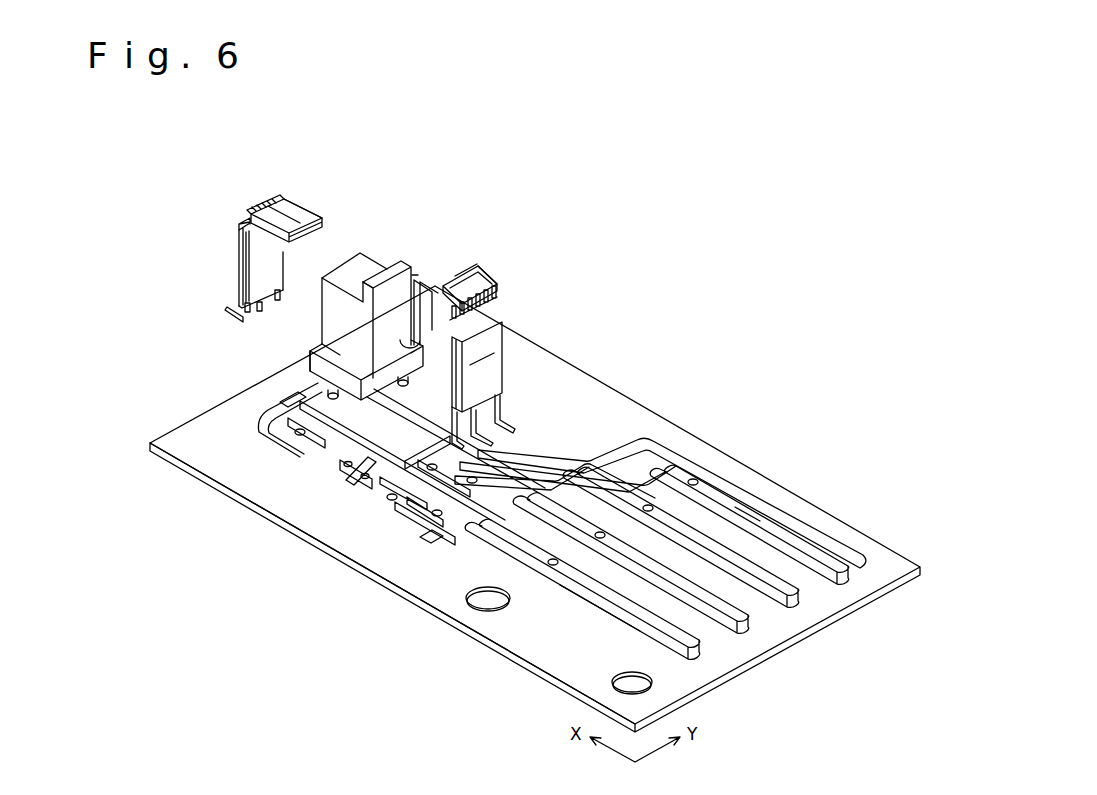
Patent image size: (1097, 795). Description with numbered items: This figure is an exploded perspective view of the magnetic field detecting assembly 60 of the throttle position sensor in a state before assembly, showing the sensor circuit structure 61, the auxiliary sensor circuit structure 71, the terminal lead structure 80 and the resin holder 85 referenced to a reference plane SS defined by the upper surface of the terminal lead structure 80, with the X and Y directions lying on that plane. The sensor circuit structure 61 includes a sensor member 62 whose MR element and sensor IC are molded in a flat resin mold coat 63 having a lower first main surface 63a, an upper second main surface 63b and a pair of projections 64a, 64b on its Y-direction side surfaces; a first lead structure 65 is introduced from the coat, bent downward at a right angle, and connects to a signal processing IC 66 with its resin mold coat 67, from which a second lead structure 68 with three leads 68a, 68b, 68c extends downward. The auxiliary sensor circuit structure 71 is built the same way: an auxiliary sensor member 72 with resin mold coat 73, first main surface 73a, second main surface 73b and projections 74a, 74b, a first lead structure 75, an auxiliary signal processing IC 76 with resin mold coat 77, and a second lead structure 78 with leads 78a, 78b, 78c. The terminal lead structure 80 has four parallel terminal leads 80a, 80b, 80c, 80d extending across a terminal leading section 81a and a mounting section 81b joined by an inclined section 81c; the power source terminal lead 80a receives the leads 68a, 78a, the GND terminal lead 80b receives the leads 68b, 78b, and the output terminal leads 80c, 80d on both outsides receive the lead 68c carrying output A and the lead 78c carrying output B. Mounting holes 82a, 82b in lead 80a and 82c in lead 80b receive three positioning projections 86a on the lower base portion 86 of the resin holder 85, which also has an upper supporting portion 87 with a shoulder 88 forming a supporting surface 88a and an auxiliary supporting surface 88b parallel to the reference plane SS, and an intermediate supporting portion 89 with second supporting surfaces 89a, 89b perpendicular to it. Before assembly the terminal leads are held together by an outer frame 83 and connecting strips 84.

The magnetic field detecting assembly 60 is at (629, 271).
The sensor circuit structure 61 is at (500, 332).
The sensor member 62 is at (462, 282).
The resin mold coat 63 is at (503, 262).
The first main surface 63a is at (447, 290).
The second main surface 63b is at (485, 282).
The projection 64a is at (495, 284).
The projection 64b is at (430, 303).
The first lead structure 65 is at (492, 300).
The signal processing IC 66 is at (505, 335).
The resin mold coat 67 is at (487, 378).
The second lead structure 68 is at (517, 425).
The lead 68a is at (503, 428).
The lead 68b is at (498, 440).
The lead 68c is at (545, 455).
The auxiliary sensor circuit structure 71 is at (257, 247).
The auxiliary sensor member 72 is at (252, 216).
The resin mold coat 73 is at (296, 206).
The first main surface 73a is at (246, 258).
The second main surface 73b is at (283, 202).
The projection 74a is at (302, 210).
The projection 74b is at (246, 238).
The first lead structure 75 is at (268, 201).
The auxiliary signal processing IC 76 is at (252, 283).
The resin mold coat 77 is at (252, 273).
The second lead structure 78 is at (282, 292).
The lead 78a is at (262, 300).
The lead 78b is at (247, 311).
The lead 78c is at (225, 308).
The terminal lead structure 80 is at (430, 542).
The power source terminal lead 80a is at (797, 603).
The GND terminal lead 80b is at (750, 630).
The output terminal lead 80c is at (700, 657).
The output terminal lead 80d is at (850, 577).
The terminal leading section 81a is at (603, 622).
The mounting section 81b is at (405, 508).
The inclined section 81c is at (430, 552).
The mounting hole 82a is at (455, 538).
The mounting hole 82b is at (337, 458).
The mounting hole 82c is at (380, 502).
The outer frame 83 is at (827, 523).
The connecting strips 84 is at (462, 540).
The resin holder 85 is at (322, 355).
The lower base portion 86 is at (326, 303).
The positioning projections 86a is at (406, 386).
The upper supporting portion 87 is at (353, 251).
The shoulder 88 is at (354, 289).
The supporting surface 88a is at (398, 275).
The auxiliary supporting surface 88b is at (358, 268).
The intermediate supporting portion 89 is at (340, 318).
The second supporting surface 89a is at (413, 275).
The second supporting surface 89b is at (318, 355).
The reference plane SS is at (736, 507).